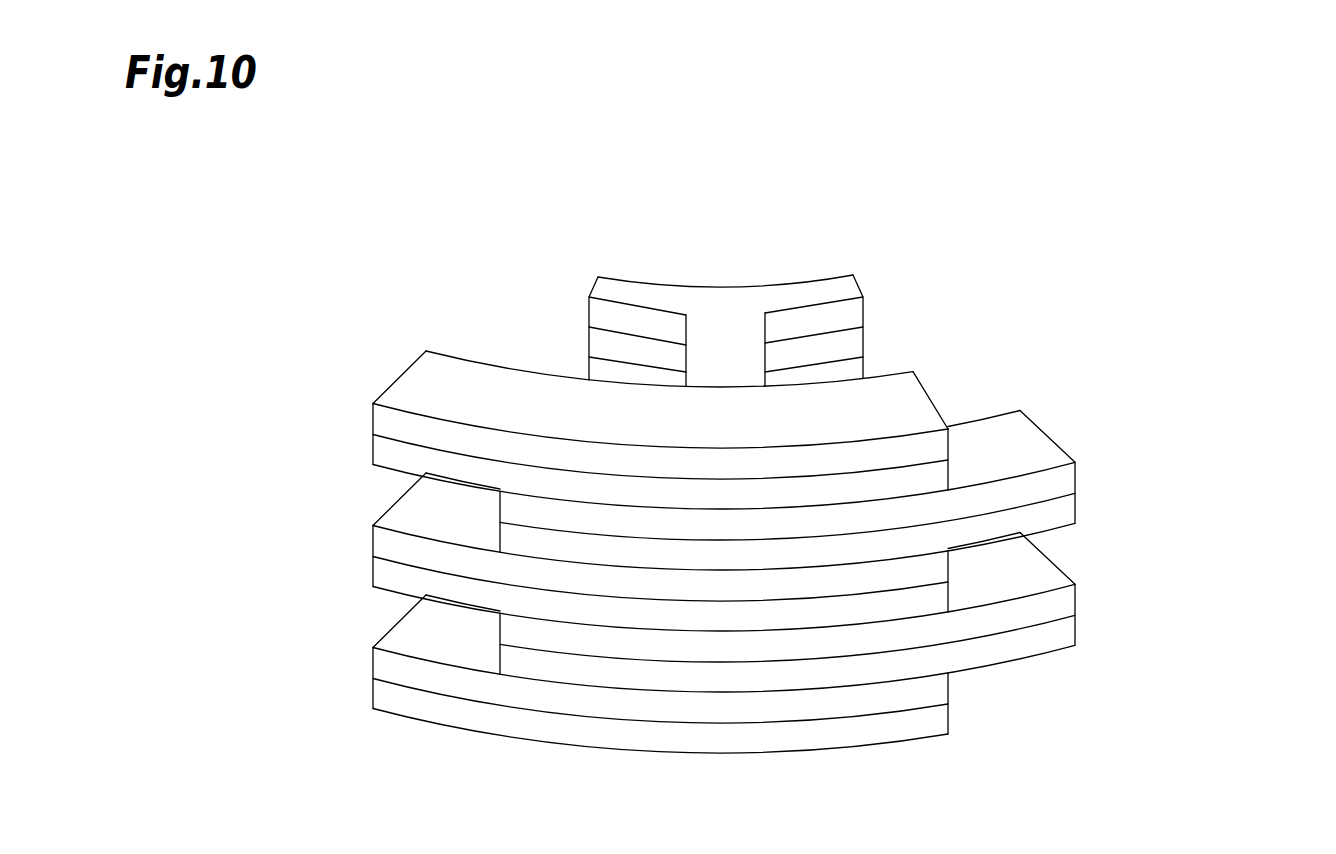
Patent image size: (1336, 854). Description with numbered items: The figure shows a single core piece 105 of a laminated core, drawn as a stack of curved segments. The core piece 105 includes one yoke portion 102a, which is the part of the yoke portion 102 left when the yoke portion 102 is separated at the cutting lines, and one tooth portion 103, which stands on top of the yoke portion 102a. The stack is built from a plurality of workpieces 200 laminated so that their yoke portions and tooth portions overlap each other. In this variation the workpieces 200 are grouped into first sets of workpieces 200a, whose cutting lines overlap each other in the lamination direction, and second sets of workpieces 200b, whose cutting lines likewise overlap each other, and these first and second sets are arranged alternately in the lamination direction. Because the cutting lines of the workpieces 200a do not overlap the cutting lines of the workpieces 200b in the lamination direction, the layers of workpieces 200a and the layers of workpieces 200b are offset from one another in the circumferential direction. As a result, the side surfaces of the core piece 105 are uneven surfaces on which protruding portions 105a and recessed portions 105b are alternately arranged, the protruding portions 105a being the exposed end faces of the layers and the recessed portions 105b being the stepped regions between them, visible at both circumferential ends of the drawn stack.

The core piece 105 is at (984, 214).
The yoke portion 102 is at (729, 523).
The yoke portion 102a is at (907, 400).
The tooth portion 103 is at (747, 334).
The workpiece 200 is at (729, 577).
The workpiece 200a is at (372, 457).
The workpiece 200b is at (1067, 515).
The protruding portion 105a is at (367, 371).
The recessed portion 105b is at (439, 505).